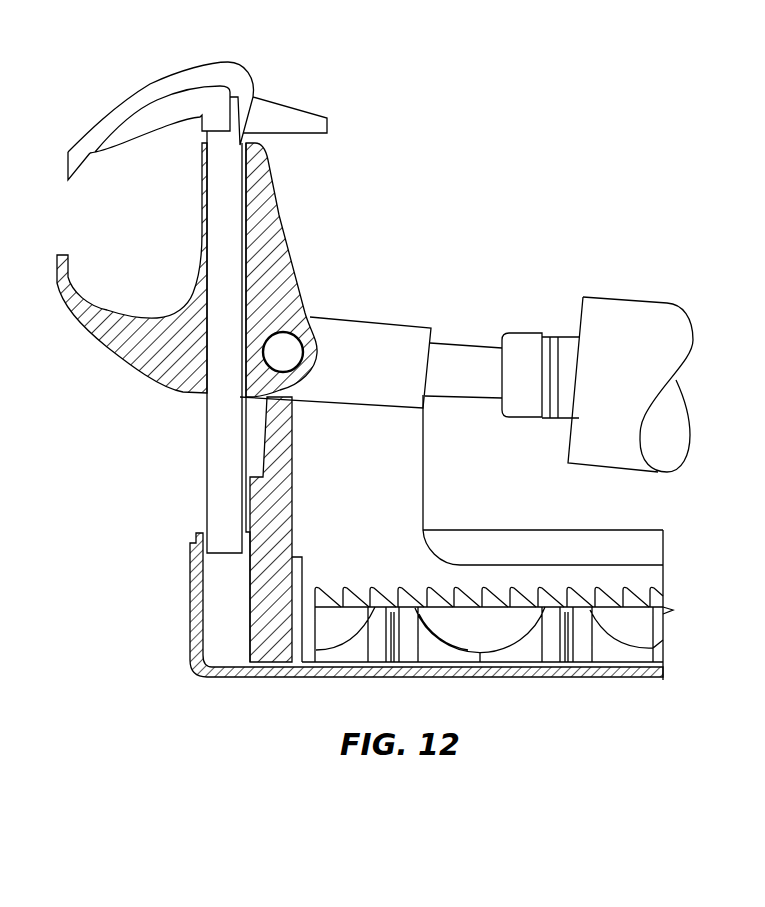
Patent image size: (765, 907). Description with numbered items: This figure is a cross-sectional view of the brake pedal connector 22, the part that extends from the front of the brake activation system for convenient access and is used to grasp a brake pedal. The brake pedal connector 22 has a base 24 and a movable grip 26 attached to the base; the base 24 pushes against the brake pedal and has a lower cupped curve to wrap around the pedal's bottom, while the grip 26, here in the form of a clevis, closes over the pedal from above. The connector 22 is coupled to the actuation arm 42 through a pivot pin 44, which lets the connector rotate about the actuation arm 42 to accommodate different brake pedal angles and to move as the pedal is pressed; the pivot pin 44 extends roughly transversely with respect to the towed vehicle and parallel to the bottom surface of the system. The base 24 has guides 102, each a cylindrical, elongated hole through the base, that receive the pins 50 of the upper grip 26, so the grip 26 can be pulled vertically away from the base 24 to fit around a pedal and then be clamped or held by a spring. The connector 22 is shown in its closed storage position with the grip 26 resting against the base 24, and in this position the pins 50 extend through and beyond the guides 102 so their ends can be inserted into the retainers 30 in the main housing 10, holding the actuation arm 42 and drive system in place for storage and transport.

The main housing 10 is at (425, 476).
The brake pedal connector 22 is at (137, 68).
The base 24 is at (140, 357).
The movable grip 26 is at (203, 72).
The retainers 30 is at (190, 603).
The actuation arm 42 is at (407, 318).
The pivot pin 44 is at (290, 352).
The pins 50 is at (223, 432).
The guides 102 is at (273, 260).